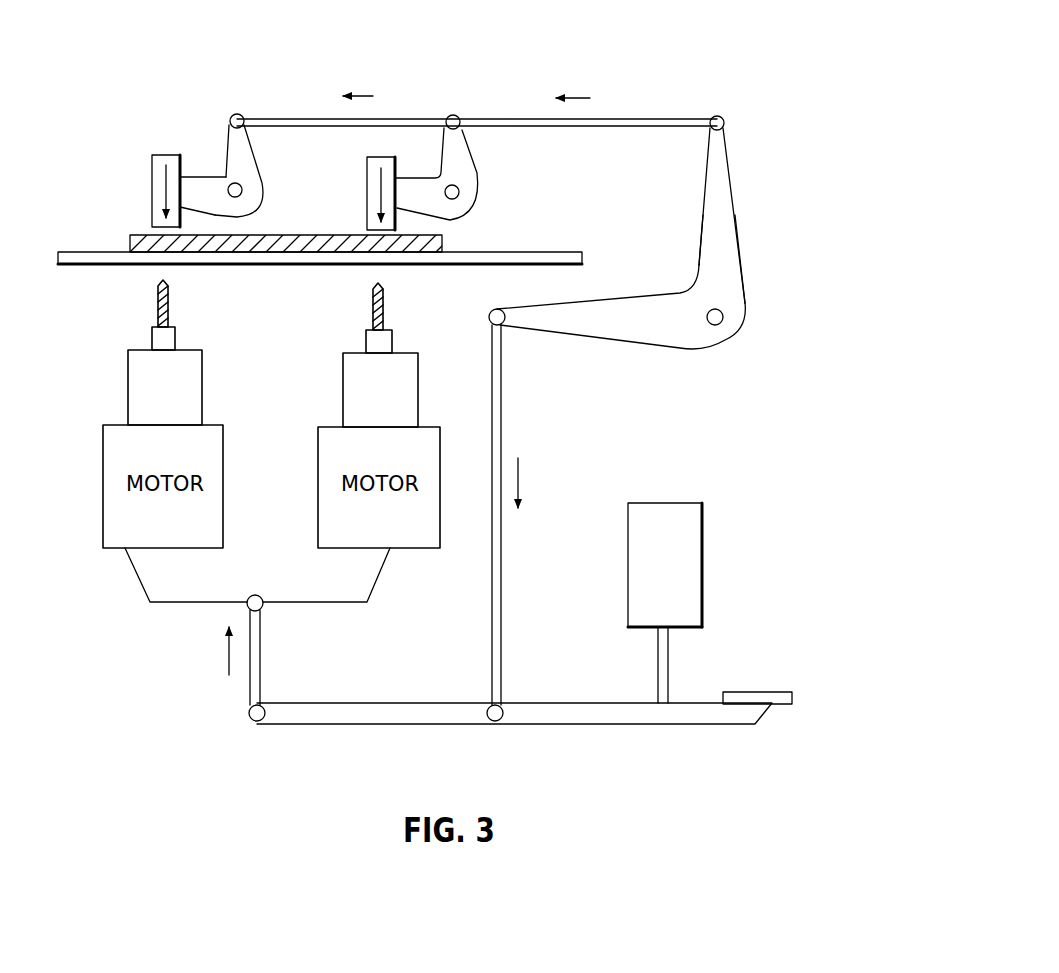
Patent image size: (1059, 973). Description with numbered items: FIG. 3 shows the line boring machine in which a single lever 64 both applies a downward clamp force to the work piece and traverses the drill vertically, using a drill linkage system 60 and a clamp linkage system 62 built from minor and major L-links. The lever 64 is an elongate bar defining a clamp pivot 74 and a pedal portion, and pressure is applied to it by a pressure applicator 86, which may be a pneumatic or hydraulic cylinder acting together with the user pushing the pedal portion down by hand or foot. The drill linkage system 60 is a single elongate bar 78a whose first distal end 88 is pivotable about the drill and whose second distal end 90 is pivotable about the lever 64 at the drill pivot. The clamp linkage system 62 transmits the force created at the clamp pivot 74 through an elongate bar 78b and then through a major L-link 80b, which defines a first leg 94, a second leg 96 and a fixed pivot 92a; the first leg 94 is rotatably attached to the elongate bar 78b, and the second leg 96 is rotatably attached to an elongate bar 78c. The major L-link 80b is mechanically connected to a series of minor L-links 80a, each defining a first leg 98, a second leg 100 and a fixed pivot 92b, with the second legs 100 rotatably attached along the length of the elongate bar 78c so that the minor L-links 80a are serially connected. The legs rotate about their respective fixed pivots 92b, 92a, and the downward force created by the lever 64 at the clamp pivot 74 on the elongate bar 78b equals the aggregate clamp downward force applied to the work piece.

The drill linkage system 60 is at (200, 663).
The clamp linkage system 62 is at (728, 66).
The lever 64 is at (610, 713).
The clamp pivot 74 is at (498, 721).
The elongate bar 78a is at (252, 685).
The elongate bar 78b is at (497, 412).
The elongate bar 78c is at (492, 120).
The minor L-link 80a is at (230, 147).
The major L-link 80b is at (723, 190).
The pressure applicator 86 is at (690, 542).
The first distal end 88 is at (247, 603).
The second distal end 90 is at (248, 715).
The fixed pivot 92a is at (717, 318).
The fixed pivot 92b is at (227, 185).
The first leg 94 is at (580, 327).
The second leg 96 is at (723, 232).
The first leg 98 is at (422, 190).
The second leg 100 is at (468, 147).